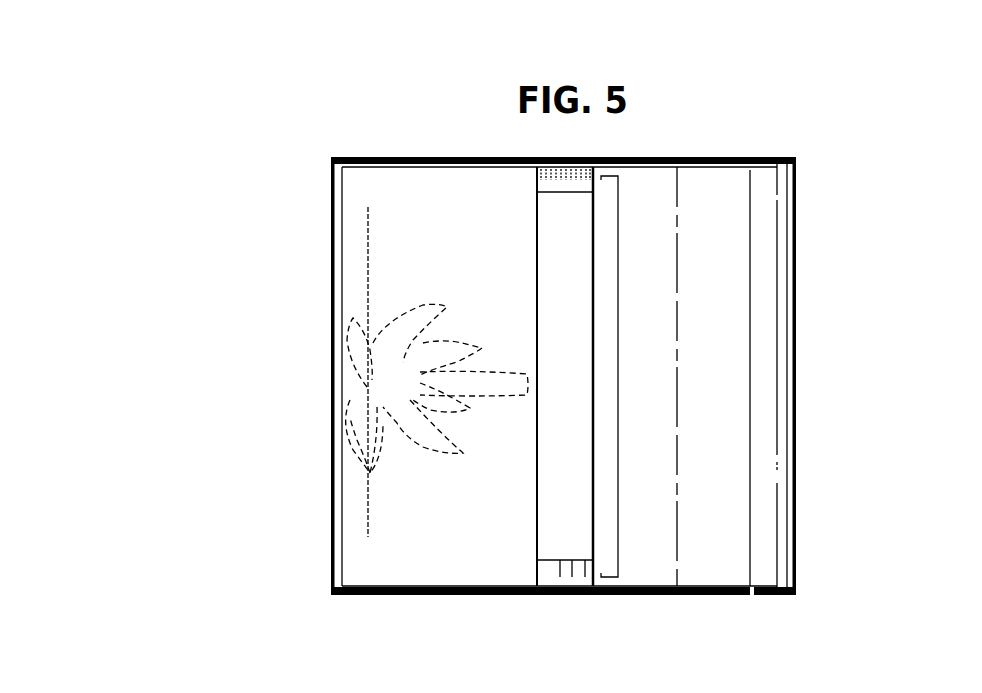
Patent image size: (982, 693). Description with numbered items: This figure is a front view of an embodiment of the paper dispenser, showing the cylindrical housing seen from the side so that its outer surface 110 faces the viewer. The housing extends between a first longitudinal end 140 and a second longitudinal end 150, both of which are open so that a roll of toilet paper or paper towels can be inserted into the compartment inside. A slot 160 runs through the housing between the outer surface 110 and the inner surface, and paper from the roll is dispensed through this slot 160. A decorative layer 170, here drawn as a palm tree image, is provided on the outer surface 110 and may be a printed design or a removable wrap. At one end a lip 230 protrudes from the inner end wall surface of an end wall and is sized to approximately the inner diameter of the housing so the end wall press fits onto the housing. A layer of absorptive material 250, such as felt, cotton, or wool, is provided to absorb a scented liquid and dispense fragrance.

The outer surface 110 is at (403, 263).
The first longitudinal end 140 is at (325, 168).
The second longitudinal end 150 is at (330, 593).
The slot 160 is at (620, 370).
The decorative layer 170 is at (403, 403).
The lip 230 is at (582, 576).
The layer of absorptive material 250 is at (370, 158).